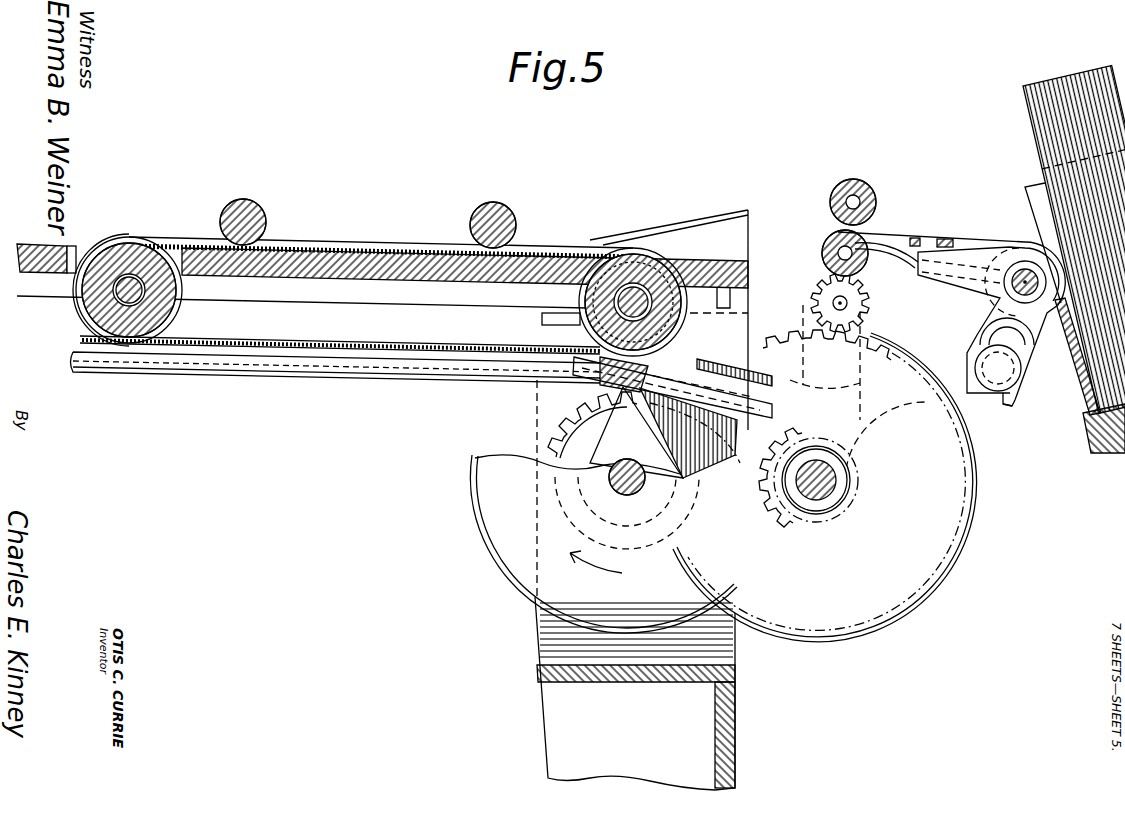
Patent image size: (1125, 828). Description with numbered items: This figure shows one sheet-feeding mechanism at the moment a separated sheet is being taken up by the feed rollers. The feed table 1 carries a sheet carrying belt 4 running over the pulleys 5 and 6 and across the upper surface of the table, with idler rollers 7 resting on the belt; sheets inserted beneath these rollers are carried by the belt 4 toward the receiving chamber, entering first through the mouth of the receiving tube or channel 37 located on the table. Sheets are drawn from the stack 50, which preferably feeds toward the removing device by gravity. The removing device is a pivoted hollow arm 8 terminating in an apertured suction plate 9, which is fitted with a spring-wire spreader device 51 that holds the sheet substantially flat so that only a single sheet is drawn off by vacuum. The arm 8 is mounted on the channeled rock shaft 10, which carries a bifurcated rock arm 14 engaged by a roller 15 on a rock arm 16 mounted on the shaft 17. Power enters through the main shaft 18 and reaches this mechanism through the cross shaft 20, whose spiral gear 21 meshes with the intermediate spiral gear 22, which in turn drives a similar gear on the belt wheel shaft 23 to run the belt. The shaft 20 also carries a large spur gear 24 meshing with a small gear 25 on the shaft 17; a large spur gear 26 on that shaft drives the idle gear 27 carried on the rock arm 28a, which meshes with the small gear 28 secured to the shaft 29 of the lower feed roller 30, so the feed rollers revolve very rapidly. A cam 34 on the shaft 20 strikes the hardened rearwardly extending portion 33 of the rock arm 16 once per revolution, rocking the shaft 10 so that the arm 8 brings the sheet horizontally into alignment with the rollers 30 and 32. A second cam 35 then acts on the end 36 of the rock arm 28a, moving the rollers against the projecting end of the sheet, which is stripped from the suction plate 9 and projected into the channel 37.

The feed table 1 is at (350, 252).
The sheet carrying belt 4 is at (278, 356).
The pulley 5 is at (618, 262).
The pulley 6 is at (136, 262).
The idler rollers 7 is at (258, 204).
The pivoted hollow arm 8 is at (968, 257).
The apertured plate 9 is at (922, 236).
The rock shaft 10 is at (1022, 268).
The bifurcated rock arm 14 is at (978, 395).
The roller 15 is at (1018, 412).
The rock arm 16 is at (974, 328).
The shaft 17 is at (832, 498).
The main shaft 18 is at (212, 380).
The cross shaft 20 is at (615, 490).
The spiral gear 21 is at (567, 441).
The intermediate spiral gear 22 is at (535, 344).
The belt wheel shaft 23 is at (640, 290).
The spur gear 24 is at (488, 572).
The small gear 25 is at (782, 522).
The spur gear 26 is at (964, 497).
The idle gear 27 is at (868, 318).
The small gear 28 is at (825, 250).
The rock arm 28a is at (816, 300).
The shaft 29 is at (860, 258).
The lower feed roller 30 is at (838, 240).
The roller 32 is at (853, 180).
The rearwardly extending portion 33 is at (745, 342).
The cam 34 is at (725, 455).
The cam 35 is at (568, 425).
The end of rock arm 36 is at (697, 398).
The receiving tube or channel 37 is at (706, 232).
The stack 50 is at (1062, 82).
The spreader device 51 is at (870, 235).